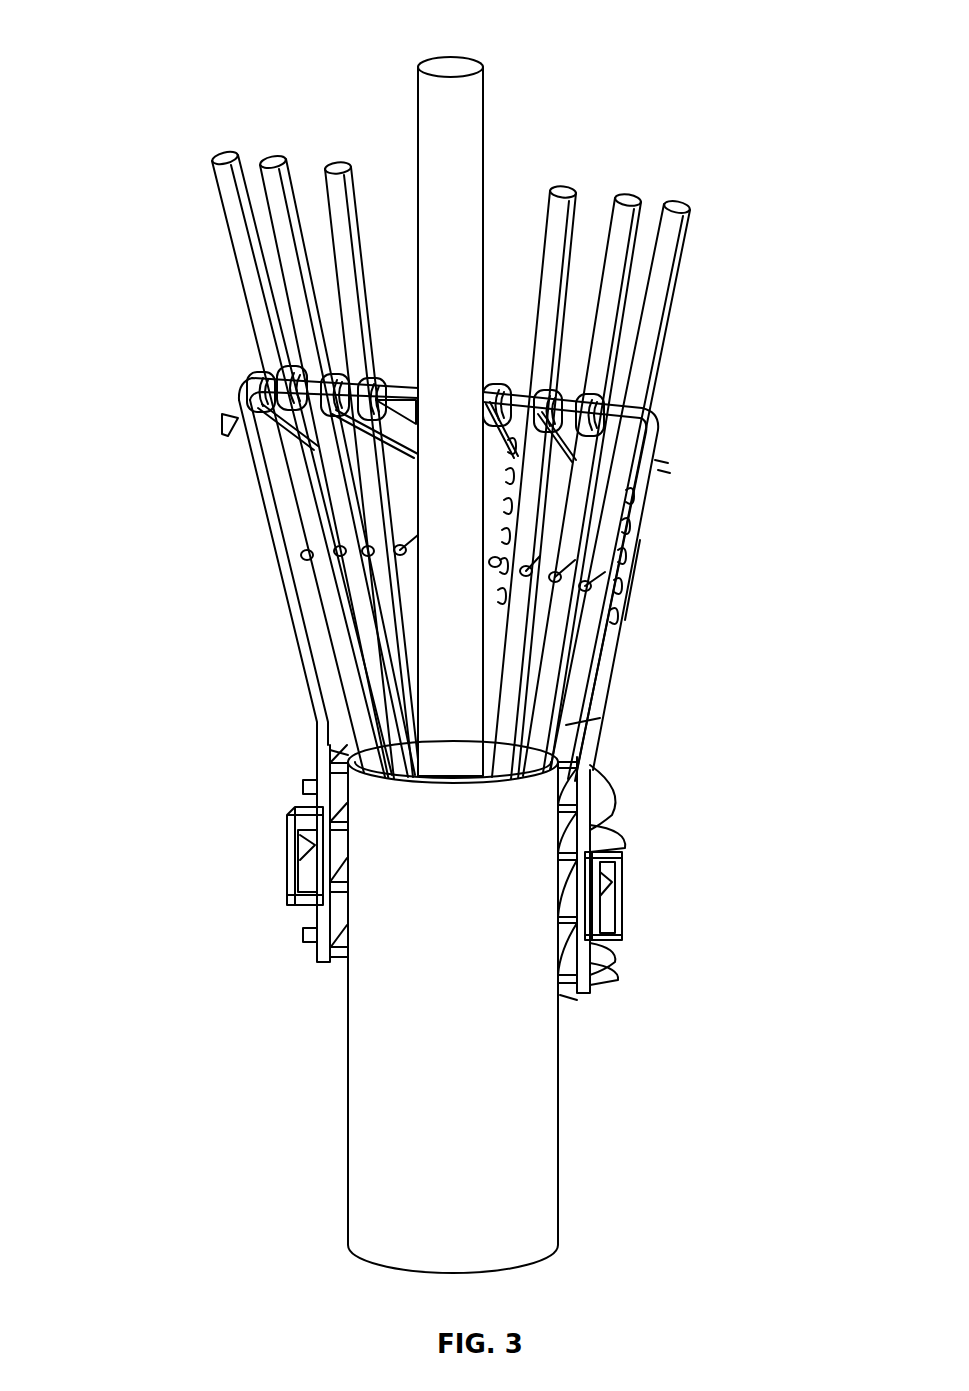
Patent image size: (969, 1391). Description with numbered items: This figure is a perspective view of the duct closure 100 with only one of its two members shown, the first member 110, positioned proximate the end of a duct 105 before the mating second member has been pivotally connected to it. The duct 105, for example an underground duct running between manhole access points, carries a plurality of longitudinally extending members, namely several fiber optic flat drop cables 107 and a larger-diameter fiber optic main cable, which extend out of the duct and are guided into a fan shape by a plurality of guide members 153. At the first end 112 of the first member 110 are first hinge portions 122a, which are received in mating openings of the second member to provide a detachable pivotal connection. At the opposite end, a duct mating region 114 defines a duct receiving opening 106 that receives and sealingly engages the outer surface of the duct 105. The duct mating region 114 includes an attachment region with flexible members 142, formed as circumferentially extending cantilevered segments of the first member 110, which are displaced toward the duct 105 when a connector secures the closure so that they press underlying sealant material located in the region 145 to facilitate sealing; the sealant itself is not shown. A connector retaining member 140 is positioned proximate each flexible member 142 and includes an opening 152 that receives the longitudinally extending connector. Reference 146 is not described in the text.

The duct closure 100 is at (135, 35).
The duct 105 is at (540, 1078).
The duct receiving opening 106 is at (335, 775).
The fiber optic flat drop cables 107 is at (710, 181).
The first member 110 is at (640, 605).
The first end 112 is at (238, 395).
The duct mating region 114 is at (320, 972).
The first hinge portion 122a is at (258, 372).
The connector retaining member 140 is at (290, 860).
The flexible members 142 is at (300, 880).
The region 145 is at (574, 713).
The spring 146 is at (578, 800).
The opening 152 is at (300, 835).
The guide members 153 is at (300, 553).